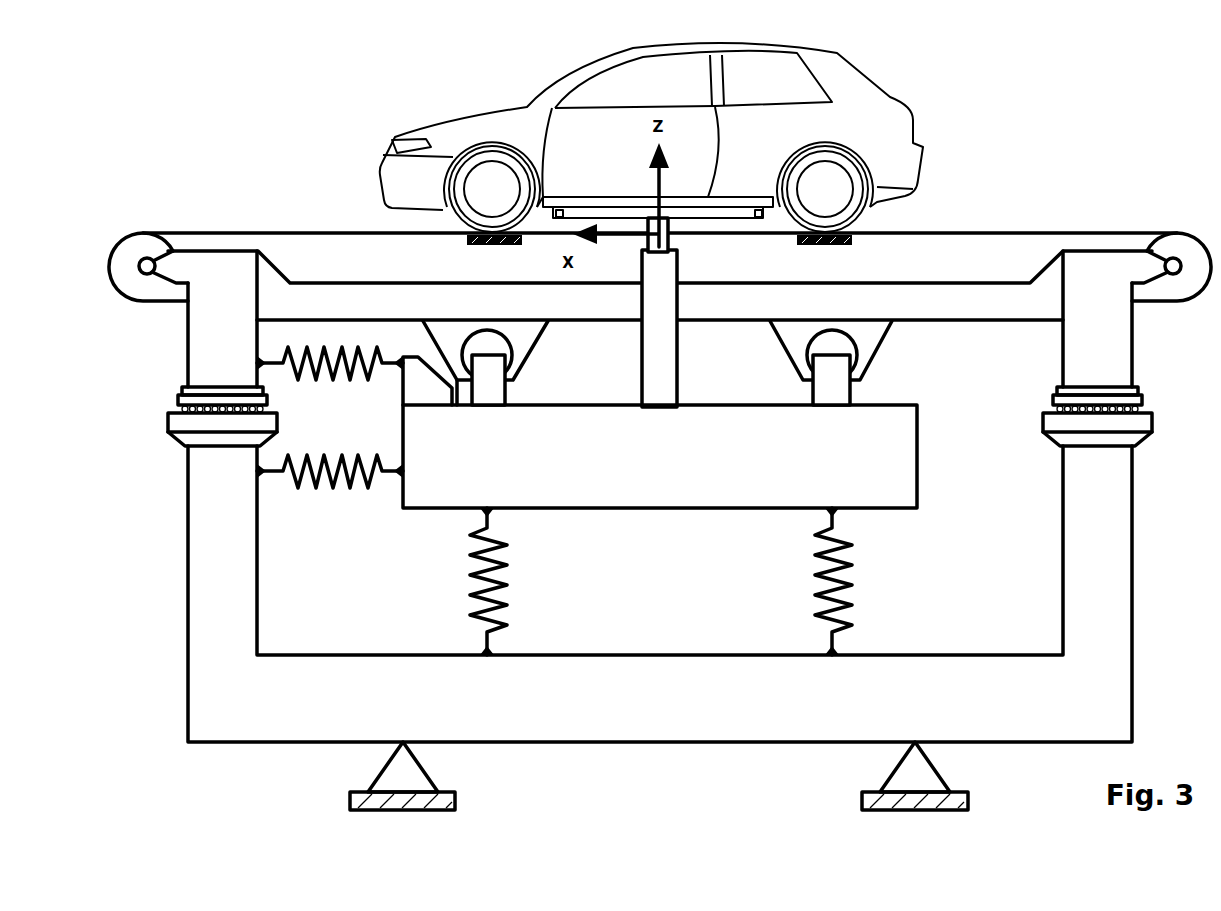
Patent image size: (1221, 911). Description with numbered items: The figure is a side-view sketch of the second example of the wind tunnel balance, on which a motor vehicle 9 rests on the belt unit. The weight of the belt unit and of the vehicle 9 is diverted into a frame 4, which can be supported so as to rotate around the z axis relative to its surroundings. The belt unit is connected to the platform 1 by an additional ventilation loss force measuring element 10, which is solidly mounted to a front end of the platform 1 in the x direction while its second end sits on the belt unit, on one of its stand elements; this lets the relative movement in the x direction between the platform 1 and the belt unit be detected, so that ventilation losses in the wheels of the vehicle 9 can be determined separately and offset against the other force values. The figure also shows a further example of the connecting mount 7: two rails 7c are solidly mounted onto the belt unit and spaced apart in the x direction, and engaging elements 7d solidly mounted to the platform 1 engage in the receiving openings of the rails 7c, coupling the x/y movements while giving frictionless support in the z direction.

The platform 1 is at (590, 470).
The frame 4 is at (217, 488).
The connecting mount 7 is at (485, 381).
The rails 7c is at (452, 332).
The engaging elements 7d is at (432, 321).
The motor vehicle 9 is at (475, 120).
The ventilation loss force measuring element 10 is at (325, 348).